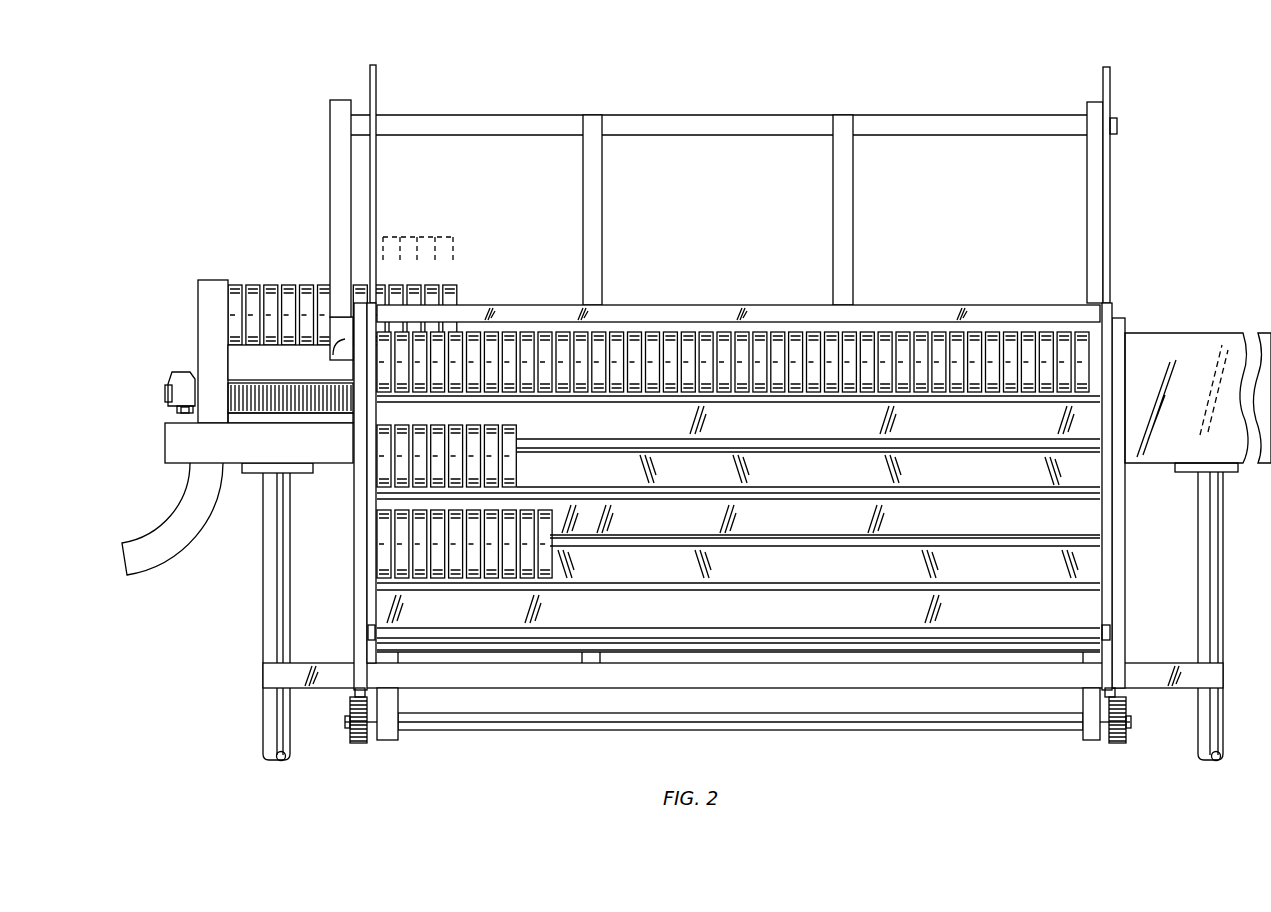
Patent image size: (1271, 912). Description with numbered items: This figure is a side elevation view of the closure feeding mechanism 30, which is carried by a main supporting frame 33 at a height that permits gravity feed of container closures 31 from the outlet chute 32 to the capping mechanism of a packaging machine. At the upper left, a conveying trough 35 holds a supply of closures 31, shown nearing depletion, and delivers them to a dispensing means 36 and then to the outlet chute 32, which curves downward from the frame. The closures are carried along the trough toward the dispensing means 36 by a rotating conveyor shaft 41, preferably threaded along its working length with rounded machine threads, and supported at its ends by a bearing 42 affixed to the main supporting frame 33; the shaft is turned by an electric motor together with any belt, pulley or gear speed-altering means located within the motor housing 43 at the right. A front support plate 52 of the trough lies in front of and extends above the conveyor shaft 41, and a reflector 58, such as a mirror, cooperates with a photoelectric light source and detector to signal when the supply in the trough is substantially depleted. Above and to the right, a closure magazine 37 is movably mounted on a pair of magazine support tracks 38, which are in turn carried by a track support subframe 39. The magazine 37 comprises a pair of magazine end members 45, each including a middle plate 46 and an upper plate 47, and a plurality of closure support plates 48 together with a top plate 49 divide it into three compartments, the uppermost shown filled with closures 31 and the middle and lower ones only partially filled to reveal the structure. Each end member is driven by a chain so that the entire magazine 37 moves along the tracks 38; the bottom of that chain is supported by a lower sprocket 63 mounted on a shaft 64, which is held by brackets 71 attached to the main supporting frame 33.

The closure feeding mechanism 30 is at (687, 414).
The container closures 31 is at (308, 294).
The outlet chute 32 is at (143, 538).
The main supporting frame 33 is at (320, 452).
The conveying trough 35 is at (244, 340).
The dispensing means 36 is at (207, 310).
The closure magazine 37 is at (735, 500).
The magazine support tracks 38 is at (377, 74).
The track support subframe 39 is at (723, 183).
The conveyor shaft 41 is at (253, 408).
The bearing 42 is at (180, 380).
The motor housing 43 is at (1197, 400).
The magazine end members 45 is at (735, 500).
The middle plate 46 is at (358, 503).
The upper plate 47 is at (373, 530).
The closure support plates 48 is at (767, 432).
The top plate 49 is at (695, 317).
The front support plate 52 is at (262, 369).
The reflector 58 is at (347, 340).
The lower sprocket 63 is at (353, 743).
The shaft 64 is at (573, 730).
The brackets 71 is at (397, 740).